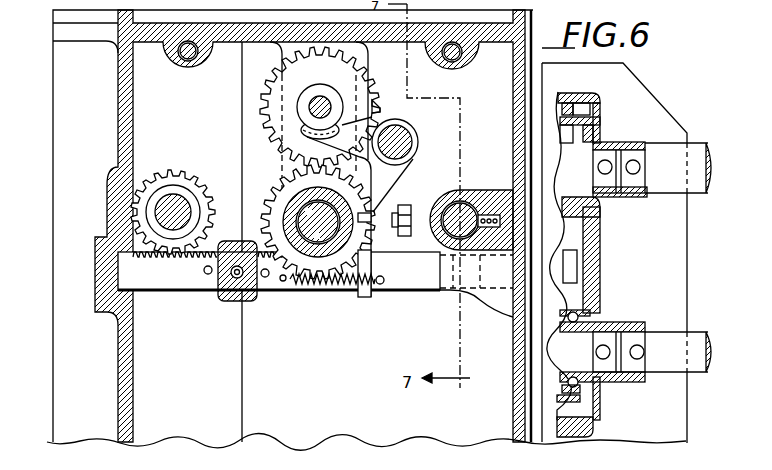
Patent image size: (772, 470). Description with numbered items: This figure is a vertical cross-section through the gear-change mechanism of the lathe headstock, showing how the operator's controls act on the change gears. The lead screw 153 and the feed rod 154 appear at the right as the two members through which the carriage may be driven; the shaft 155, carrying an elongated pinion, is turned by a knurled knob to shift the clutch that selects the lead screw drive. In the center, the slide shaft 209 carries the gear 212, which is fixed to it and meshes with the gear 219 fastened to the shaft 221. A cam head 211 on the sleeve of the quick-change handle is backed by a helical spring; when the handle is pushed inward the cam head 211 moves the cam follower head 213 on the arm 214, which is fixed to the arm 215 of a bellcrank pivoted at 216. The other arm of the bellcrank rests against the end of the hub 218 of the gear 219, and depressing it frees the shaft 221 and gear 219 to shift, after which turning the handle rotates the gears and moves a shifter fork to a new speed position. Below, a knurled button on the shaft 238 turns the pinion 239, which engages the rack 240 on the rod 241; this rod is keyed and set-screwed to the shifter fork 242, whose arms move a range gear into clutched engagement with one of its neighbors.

The lead screw 153 is at (667, 192).
The feed rod 154 is at (671, 342).
The shaft 155 is at (463, 207).
The slide shaft 209 is at (288, 200).
The cam head 211 is at (288, 283).
The gear 212 is at (282, 166).
The cam follower head 213 is at (380, 200).
The arm 214 is at (377, 212).
The arm 215 is at (394, 236).
The pivot 216 is at (402, 140).
The hub 218 is at (312, 95).
The gear 219 is at (360, 89).
The shaft 221 is at (326, 96).
The shaft 238 is at (186, 204).
The pinion 239 is at (162, 178).
The rack 240 is at (223, 243).
The rod 241 is at (197, 288).
The shifter fork 242 is at (380, 297).